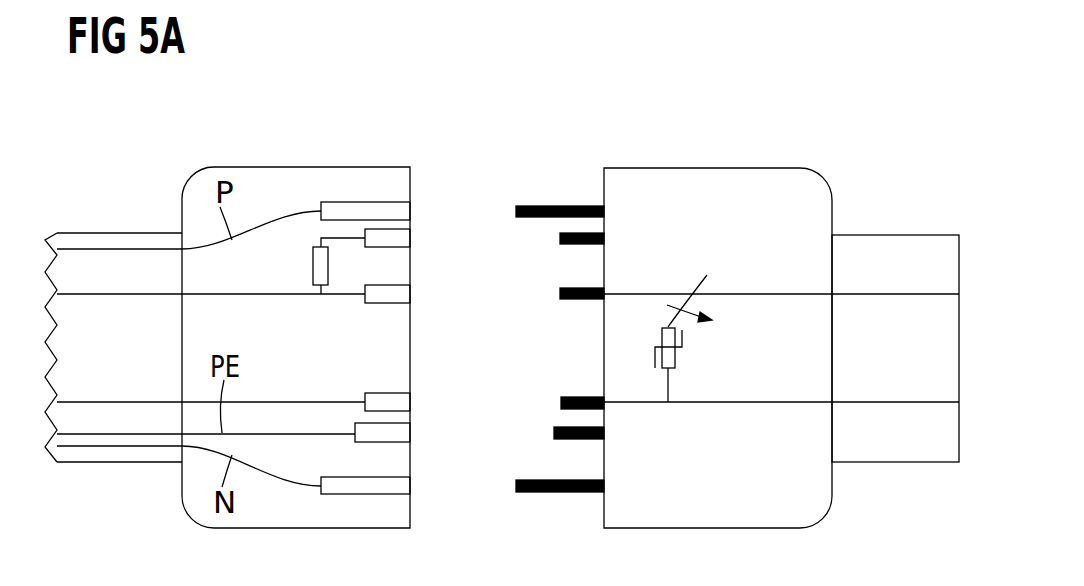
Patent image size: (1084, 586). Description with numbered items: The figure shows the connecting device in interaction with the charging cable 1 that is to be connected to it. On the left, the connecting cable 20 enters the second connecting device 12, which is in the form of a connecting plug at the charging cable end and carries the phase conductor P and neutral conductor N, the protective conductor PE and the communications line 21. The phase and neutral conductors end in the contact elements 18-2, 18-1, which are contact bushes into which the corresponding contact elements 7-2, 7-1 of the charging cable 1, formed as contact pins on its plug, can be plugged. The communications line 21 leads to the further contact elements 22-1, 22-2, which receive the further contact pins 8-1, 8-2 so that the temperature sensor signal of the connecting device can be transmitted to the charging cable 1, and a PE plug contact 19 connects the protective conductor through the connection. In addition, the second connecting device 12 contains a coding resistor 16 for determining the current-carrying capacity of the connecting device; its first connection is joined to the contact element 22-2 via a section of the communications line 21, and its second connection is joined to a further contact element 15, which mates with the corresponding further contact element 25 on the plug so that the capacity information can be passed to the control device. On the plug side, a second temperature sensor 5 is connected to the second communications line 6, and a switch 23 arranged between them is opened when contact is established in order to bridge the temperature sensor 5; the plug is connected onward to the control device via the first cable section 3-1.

The charging cable 1 is at (882, 125).
The first cable section 3-1 is at (895, 463).
The second temperature sensor 5 is at (677, 357).
The second communications line 6 is at (893, 400).
The contact element 7-1 is at (543, 493).
The contact element 7-2 is at (558, 205).
The further contact pin 8-1 is at (560, 398).
The further contact pin 8-2 is at (560, 296).
The second connecting device 12 is at (255, 167).
The further contact element 15 is at (410, 236).
The coding resistor 16 is at (313, 268).
The contact element 18-1 is at (355, 497).
The contact element 18-2 is at (341, 202).
The PE plug contact 19 is at (554, 433).
The connecting cable 20 is at (108, 232).
The communications line 21 is at (108, 400).
The contact element 22-1 is at (410, 400).
The contact element 22-2 is at (410, 292).
The switch 23 is at (693, 285).
The further contact element 25 is at (560, 238).